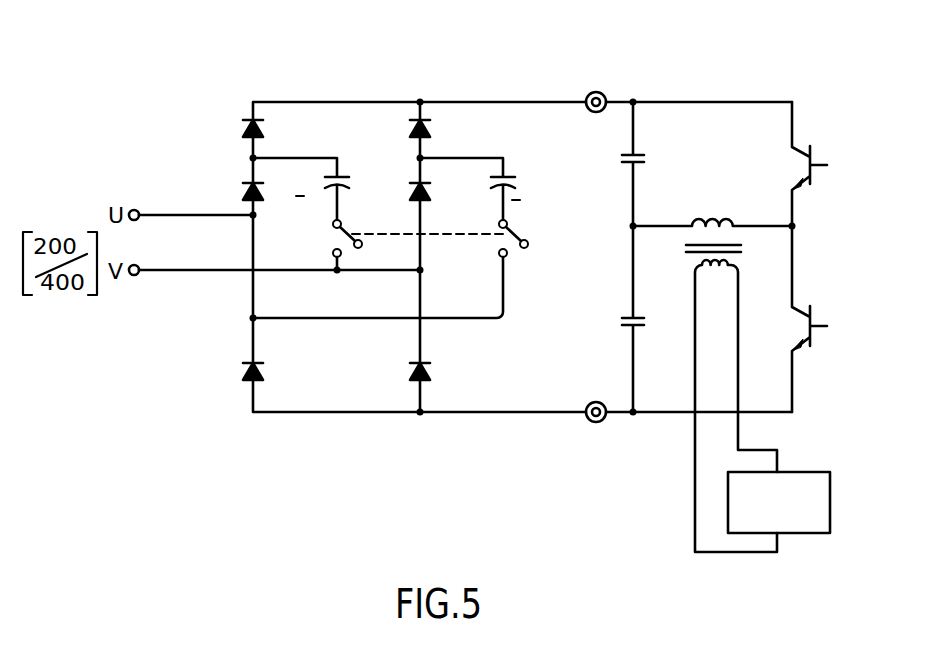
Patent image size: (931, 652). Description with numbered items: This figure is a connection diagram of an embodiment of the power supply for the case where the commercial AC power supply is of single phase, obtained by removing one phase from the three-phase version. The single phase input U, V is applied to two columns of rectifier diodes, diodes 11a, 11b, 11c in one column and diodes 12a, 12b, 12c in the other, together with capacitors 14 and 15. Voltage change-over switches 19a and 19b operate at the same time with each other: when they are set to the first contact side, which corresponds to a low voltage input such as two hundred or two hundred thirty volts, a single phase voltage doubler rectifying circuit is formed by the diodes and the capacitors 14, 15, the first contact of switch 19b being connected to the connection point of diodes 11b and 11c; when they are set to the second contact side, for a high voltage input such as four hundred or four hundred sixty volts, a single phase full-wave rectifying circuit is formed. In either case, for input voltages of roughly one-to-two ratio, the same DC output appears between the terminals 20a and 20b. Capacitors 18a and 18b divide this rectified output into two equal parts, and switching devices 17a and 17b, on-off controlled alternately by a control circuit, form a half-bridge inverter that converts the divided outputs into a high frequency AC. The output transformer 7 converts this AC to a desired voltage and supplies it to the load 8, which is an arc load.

The output transformer 7 is at (743, 249).
The load 8 is at (800, 478).
The diode 11a is at (245, 130).
The diode 11b is at (246, 192).
The diode 11c is at (245, 375).
The diode 12a is at (428, 130).
The diode 12b is at (427, 192).
The diode 12c is at (428, 375).
The capacitor 14 is at (346, 180).
The capacitor 15 is at (517, 179).
The switching device 17a is at (800, 146).
The switching device 17b is at (803, 346).
The capacitor 18a is at (645, 164).
The capacitor 18b is at (621, 323).
The voltage change-over switch 19a is at (345, 252).
The voltage change-over switch 19b is at (513, 251).
The terminal 20a is at (599, 91).
The terminal 20b is at (598, 423).